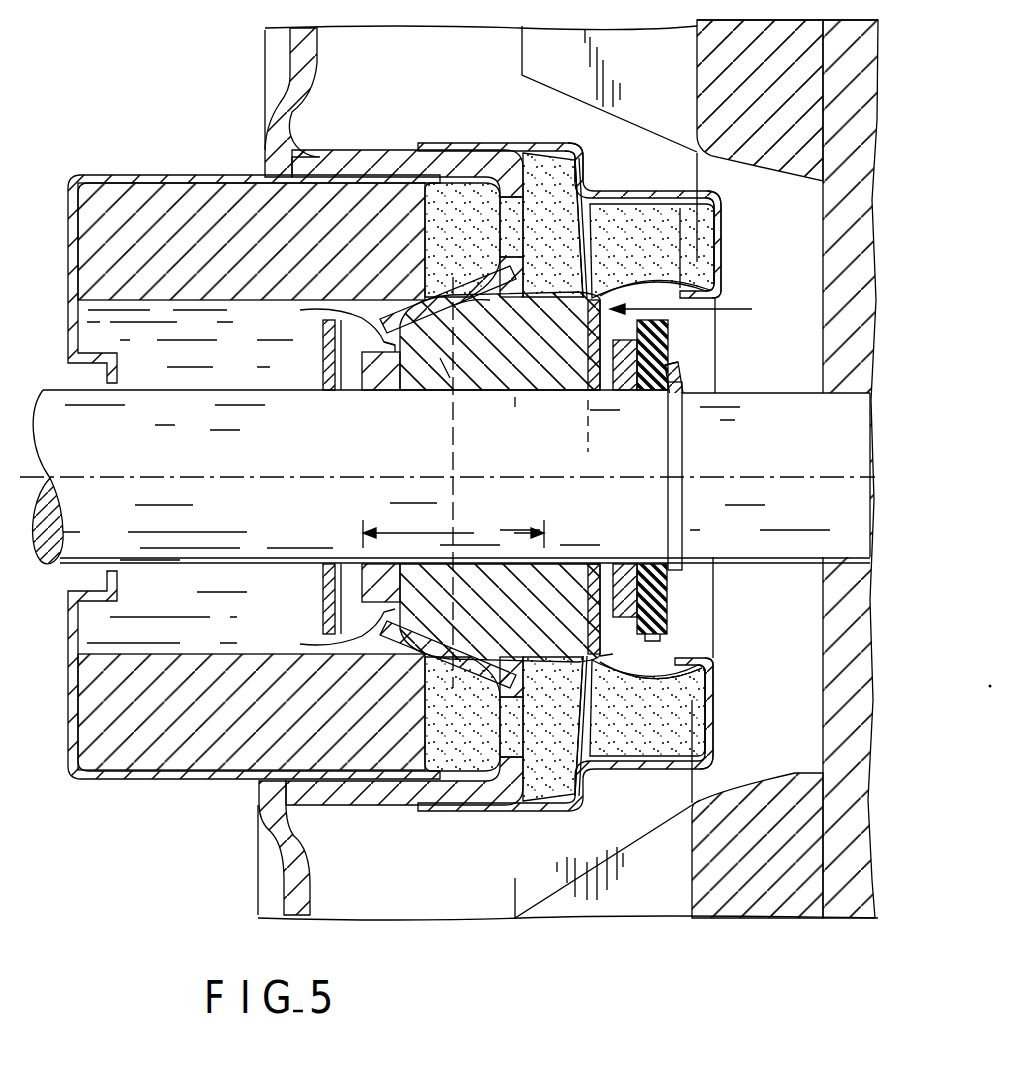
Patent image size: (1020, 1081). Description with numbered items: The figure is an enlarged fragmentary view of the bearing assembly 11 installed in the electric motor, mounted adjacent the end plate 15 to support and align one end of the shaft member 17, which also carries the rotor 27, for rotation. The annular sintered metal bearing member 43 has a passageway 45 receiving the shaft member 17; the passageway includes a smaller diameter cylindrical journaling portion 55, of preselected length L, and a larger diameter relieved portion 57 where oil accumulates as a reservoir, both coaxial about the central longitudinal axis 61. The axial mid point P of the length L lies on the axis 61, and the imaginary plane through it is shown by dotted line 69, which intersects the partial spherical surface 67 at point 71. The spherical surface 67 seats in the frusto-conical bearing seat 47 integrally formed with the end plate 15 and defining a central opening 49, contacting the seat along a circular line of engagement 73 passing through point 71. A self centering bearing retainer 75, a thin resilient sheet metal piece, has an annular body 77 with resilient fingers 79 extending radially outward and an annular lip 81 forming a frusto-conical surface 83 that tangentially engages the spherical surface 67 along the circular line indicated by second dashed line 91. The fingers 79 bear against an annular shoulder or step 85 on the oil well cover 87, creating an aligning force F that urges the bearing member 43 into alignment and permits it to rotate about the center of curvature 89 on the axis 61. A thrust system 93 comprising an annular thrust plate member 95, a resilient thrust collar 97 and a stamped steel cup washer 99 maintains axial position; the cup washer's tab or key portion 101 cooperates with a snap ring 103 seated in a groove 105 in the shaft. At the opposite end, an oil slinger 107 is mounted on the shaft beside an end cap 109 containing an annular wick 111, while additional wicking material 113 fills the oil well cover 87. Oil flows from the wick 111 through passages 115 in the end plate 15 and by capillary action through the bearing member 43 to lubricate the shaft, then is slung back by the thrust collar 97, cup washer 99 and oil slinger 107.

The bearing assembly 11 is at (404, 256).
The end plate 15 is at (267, 850).
The shaft member 17 is at (43, 567).
The rotor 27 is at (835, 910).
The bearing member 43 is at (533, 617).
The passageway 45 is at (390, 390).
The frusto-conical bearing seat 47 is at (398, 345).
The central opening 49 is at (300, 310).
The cylindrical journaling portion 55 is at (515, 407).
The relieved portion 57 is at (563, 390).
The central longitudinal axis 61 is at (315, 477).
The partial spherical surface 67 is at (553, 477).
The dotted line 69 is at (453, 277).
The point 71 is at (434, 356).
The circular line of engagement 73 is at (455, 307).
The self centering bearing retainer 75 is at (600, 234).
The annular body 77 is at (598, 275).
The resilient fingers 79 is at (590, 195).
The annular flange or lip 81 is at (683, 248).
The frusto-conical surface 83 is at (590, 302).
The annular shoulder or step 85 is at (564, 143).
The oil well cover 87 is at (734, 263).
The center of curvature 89 is at (525, 470).
The second dashed line 91 is at (588, 442).
The thrust system 93 is at (692, 415).
The annular thrust plate member 95 is at (625, 617).
The thrust collar 97 is at (680, 627).
The cup washer 99 is at (665, 348).
The tab or key portion 101 is at (660, 366).
The snap ring 103 is at (687, 397).
The groove 105 is at (668, 500).
The oil slinger 107 is at (322, 640).
The end cap or closure member 109 is at (160, 792).
The wick 111 is at (158, 252).
The wicking material 113 is at (680, 732).
The passages 115 is at (512, 218).
The axial mid point P is at (462, 395).
The length L is at (453, 534).
The aligning or centering force F is at (690, 312).